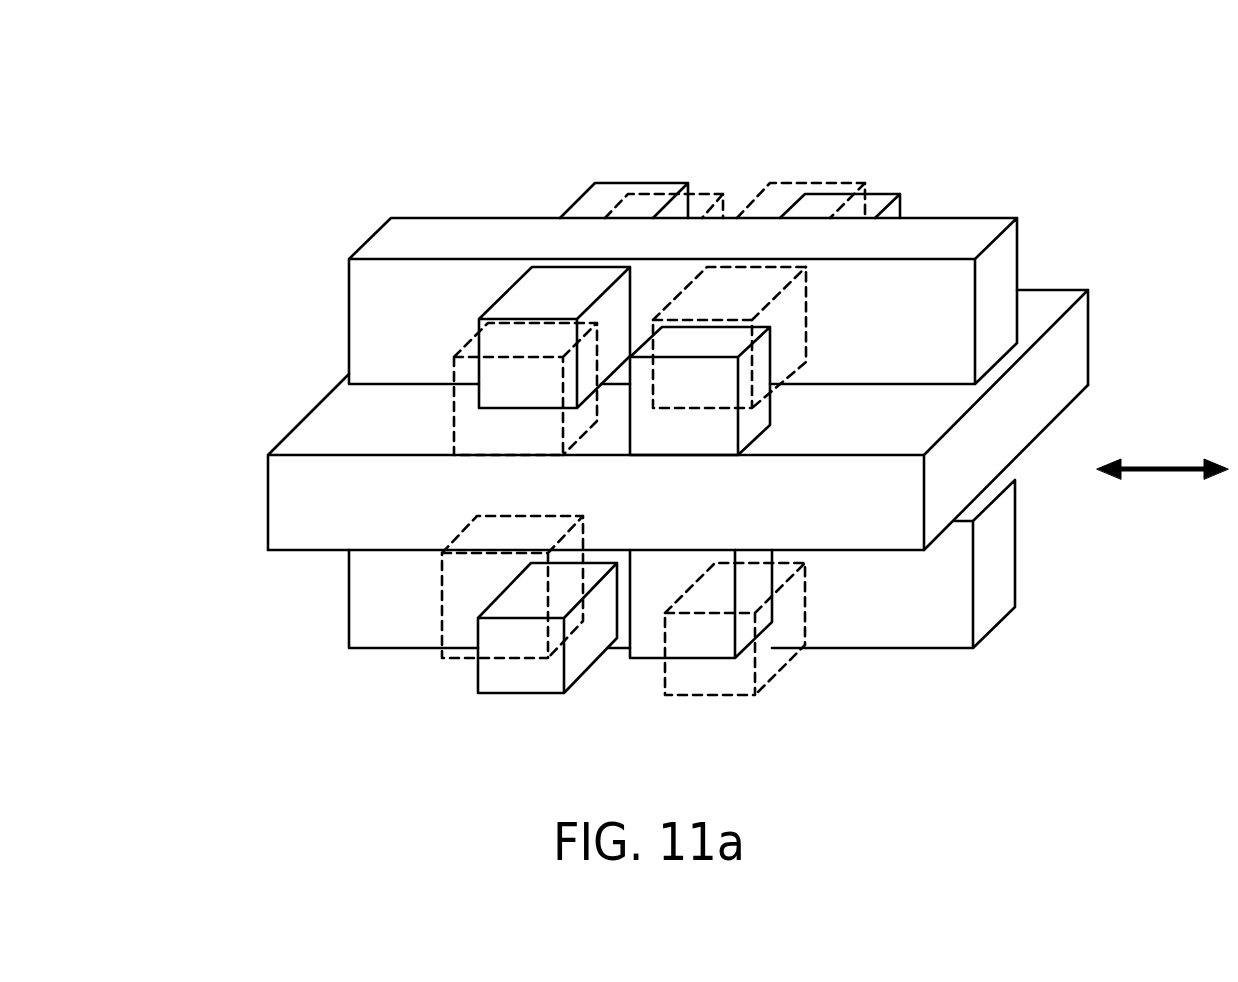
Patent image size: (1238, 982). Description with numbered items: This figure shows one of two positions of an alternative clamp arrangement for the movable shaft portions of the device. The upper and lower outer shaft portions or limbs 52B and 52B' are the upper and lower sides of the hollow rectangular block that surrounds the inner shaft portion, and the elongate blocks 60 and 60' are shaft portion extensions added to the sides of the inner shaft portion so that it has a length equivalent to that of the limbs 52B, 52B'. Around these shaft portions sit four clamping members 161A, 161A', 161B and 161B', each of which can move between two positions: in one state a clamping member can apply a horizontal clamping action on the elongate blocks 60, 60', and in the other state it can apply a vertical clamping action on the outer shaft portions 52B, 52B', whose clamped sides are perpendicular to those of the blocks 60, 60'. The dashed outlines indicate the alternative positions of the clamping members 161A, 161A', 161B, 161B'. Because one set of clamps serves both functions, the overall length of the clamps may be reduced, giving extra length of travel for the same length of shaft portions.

The upper outer shaft portion 52B is at (738, 389).
The lower outer shaft portion 52B' is at (730, 547).
The elongate block 60 is at (773, 264).
The elongate block 60' is at (764, 564).
The clamping member 161A is at (476, 383).
The clamping member 161A' is at (598, 145).
The clamping member 161B is at (871, 379).
The clamping member 161B' is at (847, 127).